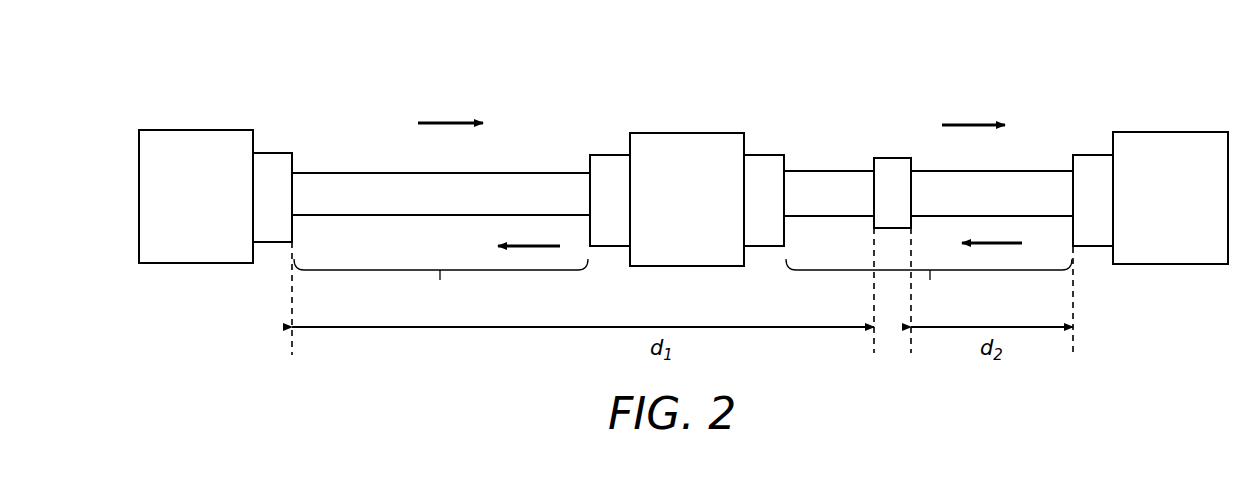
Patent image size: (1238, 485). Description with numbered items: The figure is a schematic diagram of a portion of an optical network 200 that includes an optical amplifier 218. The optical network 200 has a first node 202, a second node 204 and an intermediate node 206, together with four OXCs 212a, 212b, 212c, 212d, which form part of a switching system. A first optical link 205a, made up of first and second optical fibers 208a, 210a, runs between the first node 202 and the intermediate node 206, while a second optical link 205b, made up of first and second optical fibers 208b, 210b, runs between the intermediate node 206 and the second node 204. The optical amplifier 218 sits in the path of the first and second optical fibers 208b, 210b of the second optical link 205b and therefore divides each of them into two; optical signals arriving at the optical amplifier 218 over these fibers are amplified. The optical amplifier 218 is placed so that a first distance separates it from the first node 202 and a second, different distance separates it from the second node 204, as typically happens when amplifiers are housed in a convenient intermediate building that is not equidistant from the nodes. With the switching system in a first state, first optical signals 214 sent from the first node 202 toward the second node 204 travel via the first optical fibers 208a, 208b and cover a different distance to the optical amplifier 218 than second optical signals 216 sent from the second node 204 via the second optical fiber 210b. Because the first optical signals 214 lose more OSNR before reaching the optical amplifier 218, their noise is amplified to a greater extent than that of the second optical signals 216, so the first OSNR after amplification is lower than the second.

The optical network 200 is at (350, 94).
The first node 202 is at (196, 196).
The second node 204 is at (1170, 198).
The intermediate node 206 is at (687, 199).
The OXC 212a is at (268, 153).
The OXC 212b is at (608, 155).
The OXC 212c is at (760, 155).
The OXC 212d is at (1093, 155).
The first optical fiber 208a is at (400, 173).
The first optical fiber 208b is at (808, 171).
The second optical fiber 210a is at (400, 215).
The second optical fiber 210b is at (808, 216).
The first optical signals 214 is at (433, 123).
The second optical signals 216 is at (526, 248).
The optical amplifier 218 is at (898, 158).
The first optical link 205a is at (441, 289).
The second optical link 205b is at (929, 289).